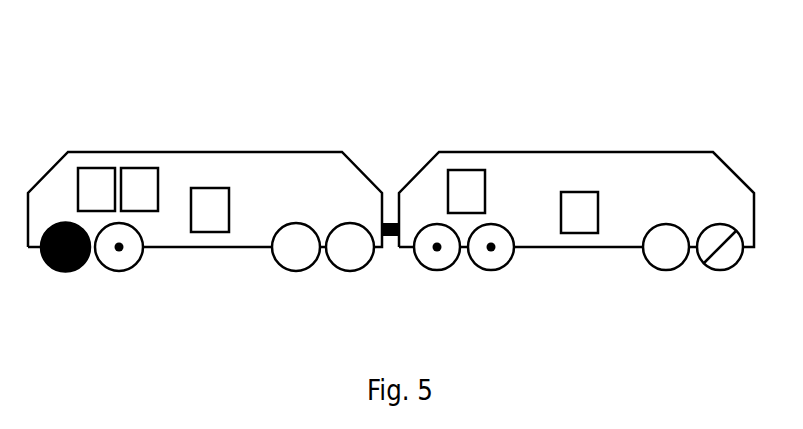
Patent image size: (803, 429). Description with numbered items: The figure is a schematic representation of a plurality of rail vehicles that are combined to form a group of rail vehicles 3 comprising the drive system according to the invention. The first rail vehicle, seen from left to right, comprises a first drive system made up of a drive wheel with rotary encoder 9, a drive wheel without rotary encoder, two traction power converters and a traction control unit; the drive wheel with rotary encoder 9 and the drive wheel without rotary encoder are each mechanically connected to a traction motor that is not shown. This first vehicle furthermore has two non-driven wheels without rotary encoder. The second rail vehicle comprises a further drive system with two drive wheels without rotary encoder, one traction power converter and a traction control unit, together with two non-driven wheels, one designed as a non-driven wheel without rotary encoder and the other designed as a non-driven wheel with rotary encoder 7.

The group of rail vehicles 3 is at (609, 38).
The non-driven wheel with rotary encoder 7 is at (720, 268).
The drive wheel with rotary encoder 9 is at (65, 268).